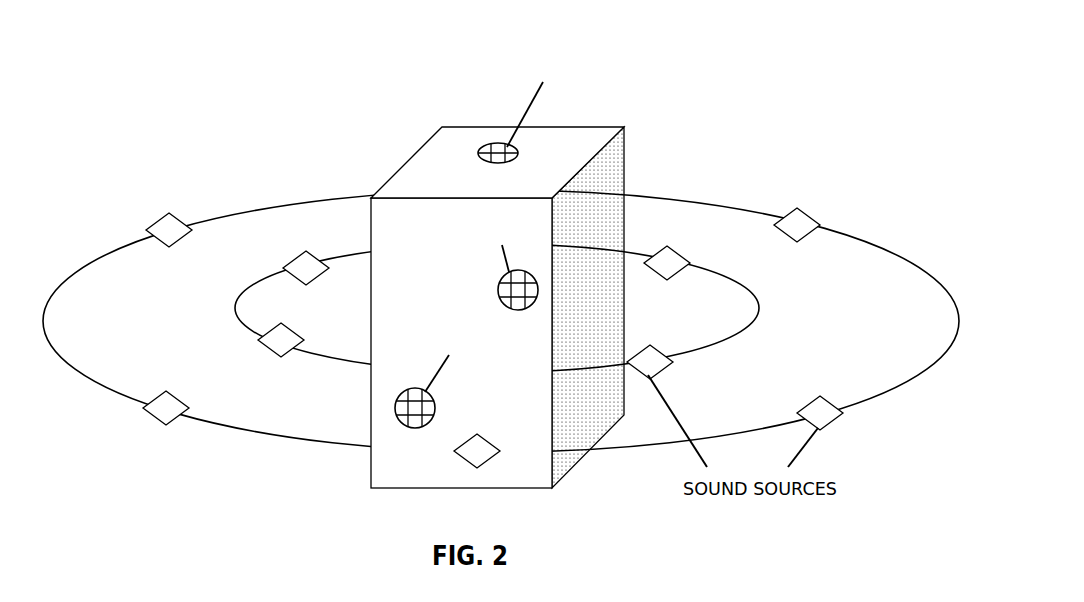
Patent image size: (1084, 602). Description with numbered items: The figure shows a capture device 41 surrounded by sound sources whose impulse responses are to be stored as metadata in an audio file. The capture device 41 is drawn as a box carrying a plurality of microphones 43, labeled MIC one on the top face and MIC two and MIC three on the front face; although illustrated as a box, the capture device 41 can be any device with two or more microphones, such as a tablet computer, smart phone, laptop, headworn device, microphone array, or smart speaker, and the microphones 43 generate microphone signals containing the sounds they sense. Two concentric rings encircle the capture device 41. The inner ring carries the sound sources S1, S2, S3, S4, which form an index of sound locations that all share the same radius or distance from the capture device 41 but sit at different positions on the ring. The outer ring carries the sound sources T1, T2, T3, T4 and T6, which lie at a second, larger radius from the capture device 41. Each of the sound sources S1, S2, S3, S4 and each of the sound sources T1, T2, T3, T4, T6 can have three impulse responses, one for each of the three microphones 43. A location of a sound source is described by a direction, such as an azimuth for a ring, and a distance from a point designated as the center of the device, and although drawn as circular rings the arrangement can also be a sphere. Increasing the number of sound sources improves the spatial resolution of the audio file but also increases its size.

The microphones 43 is at (503, 275).
The capture device 41 is at (626, 207).
The sound source S1 is at (650, 362).
The sound source S2 is at (281, 340).
The sound source S3 is at (306, 268).
The sound source S4 is at (667, 263).
The sound source T1 is at (820, 413).
The sound source T2 is at (477, 451).
The sound source T3 is at (166, 408).
The sound source T4 is at (169, 230).
The sound source T6 is at (797, 225).